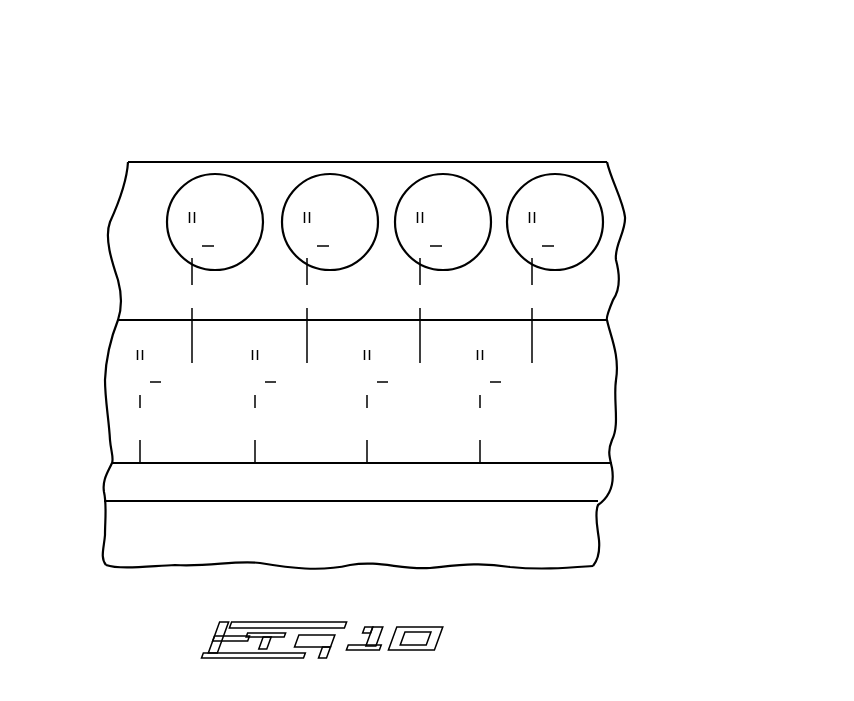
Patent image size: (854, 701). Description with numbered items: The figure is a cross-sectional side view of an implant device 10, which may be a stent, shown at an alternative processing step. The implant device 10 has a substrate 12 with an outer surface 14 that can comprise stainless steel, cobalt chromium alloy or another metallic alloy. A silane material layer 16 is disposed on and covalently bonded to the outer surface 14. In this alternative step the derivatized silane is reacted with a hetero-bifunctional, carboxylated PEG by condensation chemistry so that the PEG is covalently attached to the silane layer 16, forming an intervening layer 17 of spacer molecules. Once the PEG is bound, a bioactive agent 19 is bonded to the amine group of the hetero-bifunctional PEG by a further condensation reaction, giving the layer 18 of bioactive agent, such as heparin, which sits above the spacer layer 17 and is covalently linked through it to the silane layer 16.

The implant device 10 is at (628, 90).
The substrate 12 is at (573, 547).
The outer surface 14 is at (580, 500).
The silane material layer 16 is at (122, 483).
The intervening layer 17 is at (123, 382).
The bioactive agent layer 18 is at (132, 240).
The bioactive agent 19 is at (287, 187).